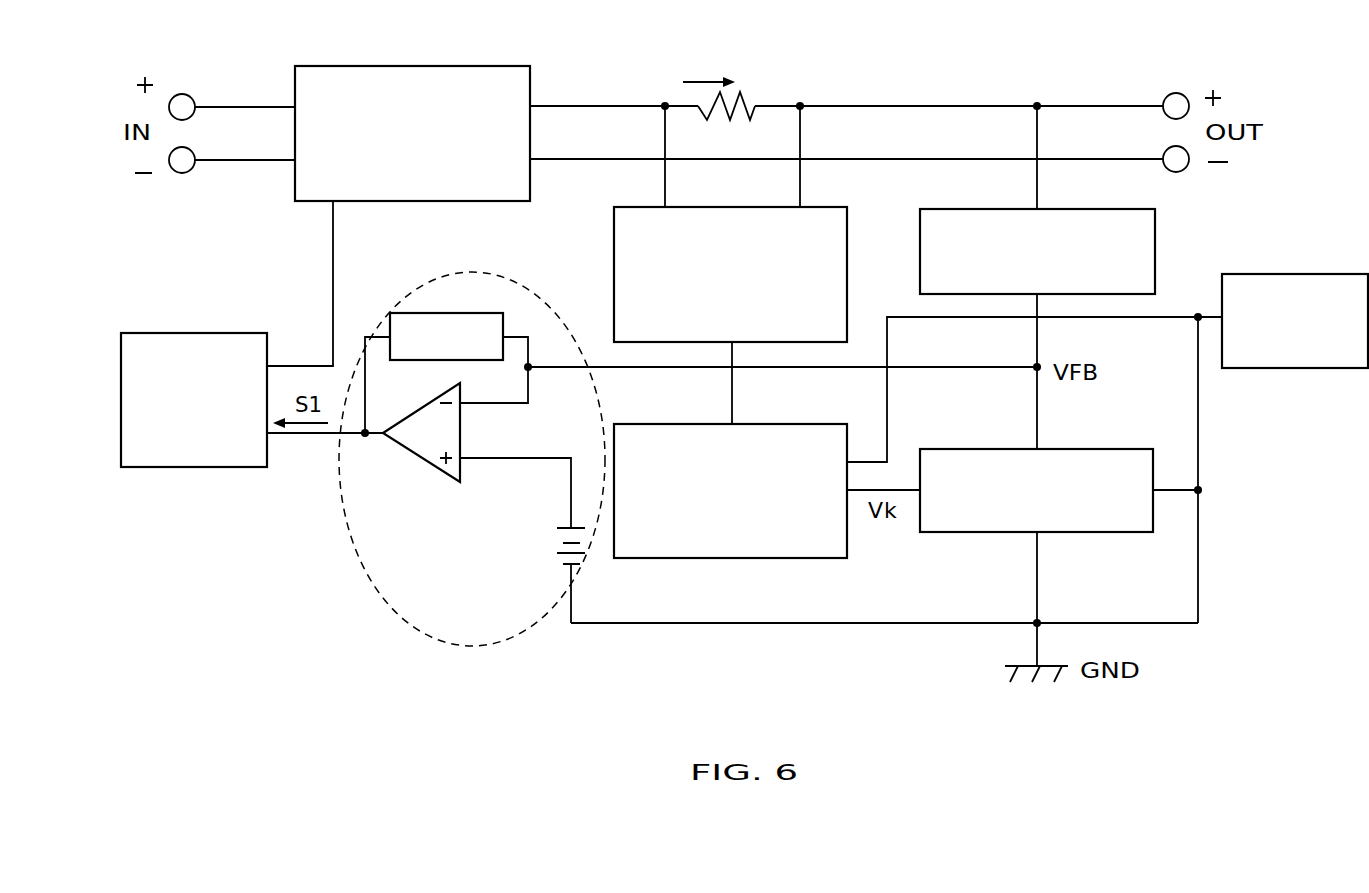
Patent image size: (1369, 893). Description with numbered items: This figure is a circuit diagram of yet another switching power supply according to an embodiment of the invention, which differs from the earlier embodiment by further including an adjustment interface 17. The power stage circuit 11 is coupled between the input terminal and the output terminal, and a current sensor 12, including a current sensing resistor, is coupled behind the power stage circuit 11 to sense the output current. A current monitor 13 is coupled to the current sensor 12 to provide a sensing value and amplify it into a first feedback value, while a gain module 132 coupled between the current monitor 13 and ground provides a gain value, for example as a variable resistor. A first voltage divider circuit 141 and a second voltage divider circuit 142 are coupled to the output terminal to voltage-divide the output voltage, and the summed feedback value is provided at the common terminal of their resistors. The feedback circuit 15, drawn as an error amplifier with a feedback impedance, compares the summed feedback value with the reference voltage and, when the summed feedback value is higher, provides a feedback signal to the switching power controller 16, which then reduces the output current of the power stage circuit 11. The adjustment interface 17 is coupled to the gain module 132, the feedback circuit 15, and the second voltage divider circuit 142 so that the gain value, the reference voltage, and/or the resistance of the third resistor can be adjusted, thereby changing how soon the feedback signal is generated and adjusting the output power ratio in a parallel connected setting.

The power stage circuit 11 is at (383, 201).
The current sensor 12 is at (757, 86).
The current monitor 13 is at (614, 277).
The gain module 132 is at (722, 558).
The first voltage divider circuit 141 is at (1155, 215).
The second voltage divider circuit 142 is at (1052, 532).
The feedback circuit 15 is at (333, 570).
The switching power controller 16 is at (190, 467).
The adjustment interface 17 is at (1275, 273).